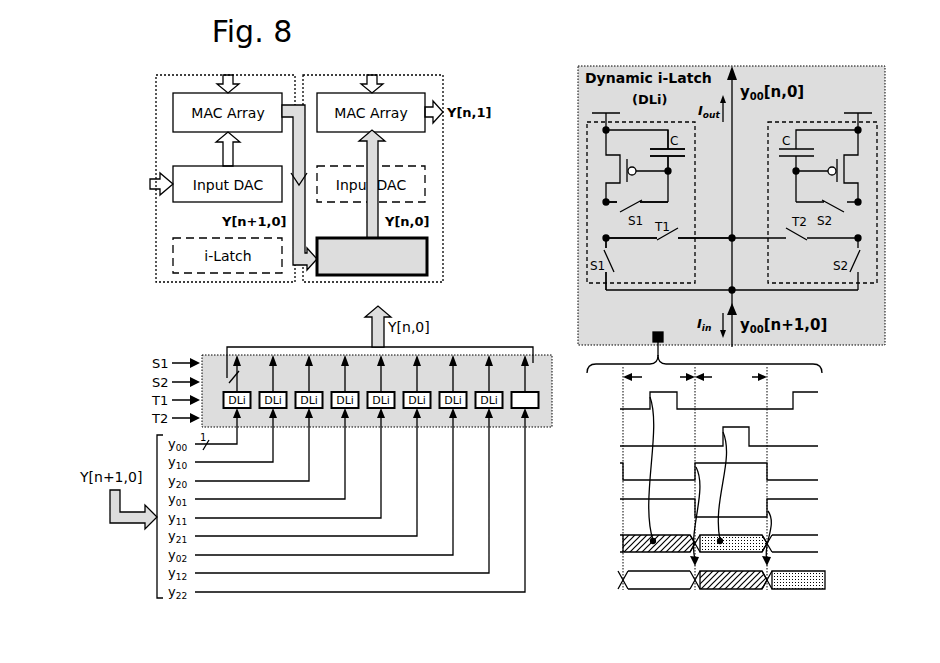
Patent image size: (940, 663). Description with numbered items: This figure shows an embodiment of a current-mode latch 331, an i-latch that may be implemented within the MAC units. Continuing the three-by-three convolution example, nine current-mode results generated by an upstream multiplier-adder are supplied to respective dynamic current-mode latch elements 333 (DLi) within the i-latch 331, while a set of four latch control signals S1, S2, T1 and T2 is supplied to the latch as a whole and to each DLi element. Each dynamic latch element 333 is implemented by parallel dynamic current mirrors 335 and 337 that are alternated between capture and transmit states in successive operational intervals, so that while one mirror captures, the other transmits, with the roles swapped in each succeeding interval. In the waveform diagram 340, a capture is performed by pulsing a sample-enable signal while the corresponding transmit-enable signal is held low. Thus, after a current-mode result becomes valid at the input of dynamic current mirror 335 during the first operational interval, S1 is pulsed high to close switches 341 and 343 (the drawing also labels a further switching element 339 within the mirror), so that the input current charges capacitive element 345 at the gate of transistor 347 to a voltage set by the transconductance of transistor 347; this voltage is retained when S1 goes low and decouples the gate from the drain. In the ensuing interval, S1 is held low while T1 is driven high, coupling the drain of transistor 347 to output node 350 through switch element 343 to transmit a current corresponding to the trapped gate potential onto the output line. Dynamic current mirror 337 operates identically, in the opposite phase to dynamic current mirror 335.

The current-mode latch 331 is at (327, 265).
The dynamic current-mode latch element 333 is at (530, 398).
The dynamic current mirror 335 is at (695, 268).
The dynamic current mirror 337 is at (768, 265).
The switch S1 (upper) 339 is at (626, 210).
The switch 341 is at (614, 263).
The switch element 343 is at (675, 237).
The capacitive element 345 is at (650, 152).
The transistor 347 is at (628, 166).
The output node 350 is at (728, 232).
The waveform diagram 340 is at (845, 426).